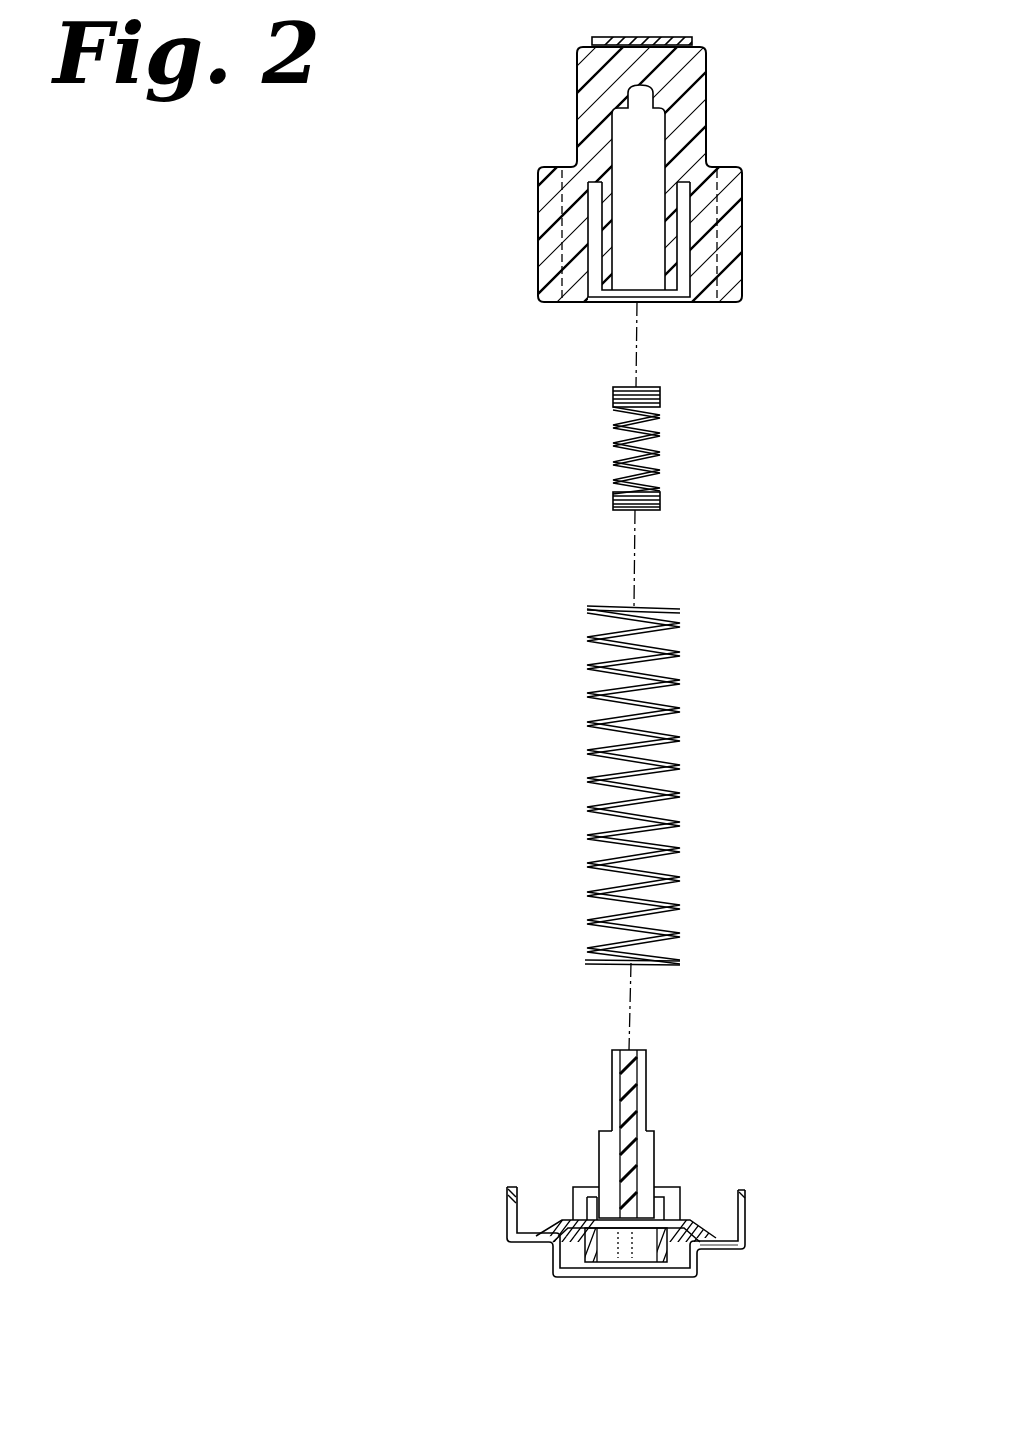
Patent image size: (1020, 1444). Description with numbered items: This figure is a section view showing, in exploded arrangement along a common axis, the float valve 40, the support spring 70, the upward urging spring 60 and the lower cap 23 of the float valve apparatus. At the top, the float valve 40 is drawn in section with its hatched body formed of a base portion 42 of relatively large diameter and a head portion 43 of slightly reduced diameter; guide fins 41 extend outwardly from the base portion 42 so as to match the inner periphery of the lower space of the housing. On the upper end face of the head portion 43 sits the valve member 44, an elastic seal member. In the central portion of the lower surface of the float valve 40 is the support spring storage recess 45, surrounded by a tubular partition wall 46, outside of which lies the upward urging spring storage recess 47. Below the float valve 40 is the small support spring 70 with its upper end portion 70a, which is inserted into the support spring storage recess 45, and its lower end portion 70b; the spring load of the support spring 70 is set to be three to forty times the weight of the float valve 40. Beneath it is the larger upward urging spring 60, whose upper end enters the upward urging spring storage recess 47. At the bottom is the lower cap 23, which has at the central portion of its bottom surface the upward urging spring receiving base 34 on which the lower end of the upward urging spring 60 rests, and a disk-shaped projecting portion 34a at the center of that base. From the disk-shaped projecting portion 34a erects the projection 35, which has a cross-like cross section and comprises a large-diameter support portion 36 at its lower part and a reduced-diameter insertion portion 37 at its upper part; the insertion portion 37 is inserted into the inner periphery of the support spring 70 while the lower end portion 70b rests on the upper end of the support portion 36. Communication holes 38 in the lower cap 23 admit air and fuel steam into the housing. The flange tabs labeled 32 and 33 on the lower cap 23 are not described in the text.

The float valve 40 is at (657, 163).
The guide fins 41 is at (732, 253).
The base portion 42 is at (705, 205).
The head portion 43 is at (707, 100).
The valve member 44 is at (643, 40).
The support spring storage recess 45 is at (623, 125).
The partition wall 46 is at (607, 203).
The upward urging spring storage recess 47 is at (593, 243).
The support spring 70 is at (691, 447).
The upper end portion of the support spring 70a is at (660, 395).
The lower end portion of the support spring 70b is at (660, 497).
The upward urging spring 60 is at (675, 762).
The projection 35 is at (709, 1112).
The insertion portion 37 is at (645, 1065).
The support portion 36 is at (682, 1134).
The disk-shaped projecting portion 34a is at (595, 1212).
The upward urging spring receiving base 34 is at (567, 1220).
The communication holes 38 is at (690, 1233).
The lower cap 23 is at (649, 1243).
The tab 32 is at (745, 1192).
The flange 33 is at (745, 1220).